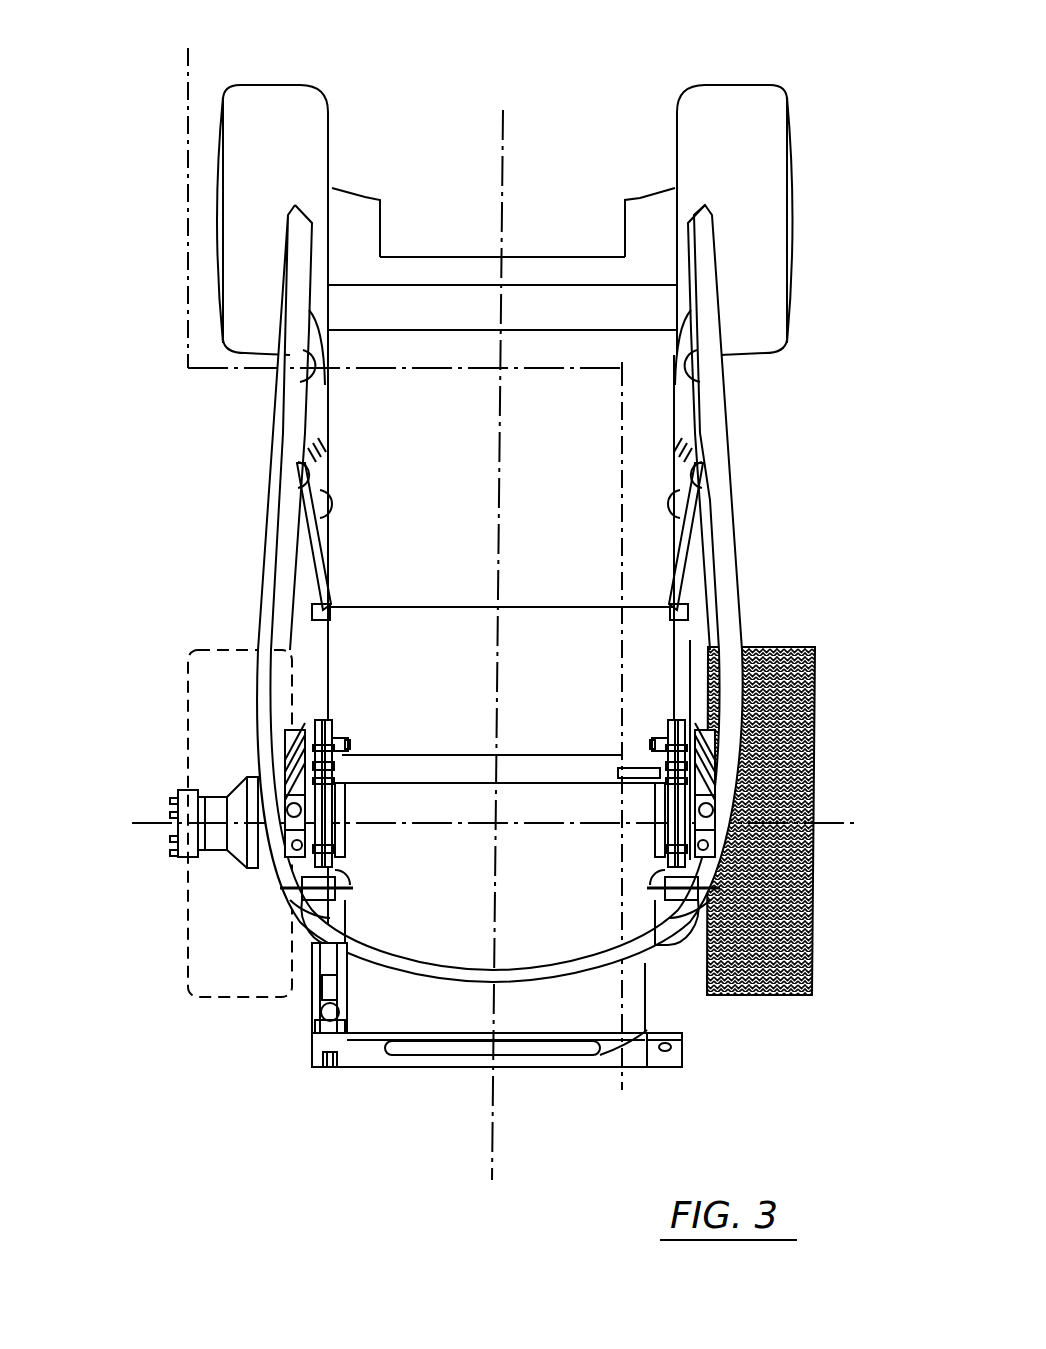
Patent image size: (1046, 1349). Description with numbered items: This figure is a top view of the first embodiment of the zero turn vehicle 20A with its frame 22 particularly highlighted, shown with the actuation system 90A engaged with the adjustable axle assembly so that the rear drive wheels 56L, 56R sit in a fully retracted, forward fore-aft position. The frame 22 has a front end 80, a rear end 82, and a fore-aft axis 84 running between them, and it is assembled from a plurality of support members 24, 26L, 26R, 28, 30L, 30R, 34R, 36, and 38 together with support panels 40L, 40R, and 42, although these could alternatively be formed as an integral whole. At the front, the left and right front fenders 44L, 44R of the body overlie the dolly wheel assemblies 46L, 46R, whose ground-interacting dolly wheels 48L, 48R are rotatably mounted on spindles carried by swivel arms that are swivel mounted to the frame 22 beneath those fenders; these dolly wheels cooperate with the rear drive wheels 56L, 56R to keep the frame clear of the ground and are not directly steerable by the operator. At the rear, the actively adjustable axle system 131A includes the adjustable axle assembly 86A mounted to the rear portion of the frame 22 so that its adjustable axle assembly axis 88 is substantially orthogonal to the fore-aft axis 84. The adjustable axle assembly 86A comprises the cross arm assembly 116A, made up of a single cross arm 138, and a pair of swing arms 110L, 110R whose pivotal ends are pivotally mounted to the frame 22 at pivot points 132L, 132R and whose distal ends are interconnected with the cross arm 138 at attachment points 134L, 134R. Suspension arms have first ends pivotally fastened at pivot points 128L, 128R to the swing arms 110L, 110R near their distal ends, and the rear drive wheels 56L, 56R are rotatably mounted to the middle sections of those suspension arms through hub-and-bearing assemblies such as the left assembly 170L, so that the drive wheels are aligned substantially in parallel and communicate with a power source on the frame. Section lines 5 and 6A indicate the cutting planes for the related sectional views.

The vehicle (first embodiment) 20A is at (132, 78).
The frame 22 is at (260, 562).
The support member 24 is at (276, 428).
The left support member 26L is at (332, 507).
The right support member 26R is at (668, 543).
The support member 28 is at (383, 1068).
The left support member 30L is at (300, 476).
The right support member 30R is at (703, 475).
The right support member 34R is at (686, 1052).
The support member 36 is at (598, 1050).
The support member 38 is at (463, 265).
The left support panel 40L is at (312, 366).
The right support panel 40R is at (696, 366).
The support panel 42 is at (587, 357).
The left front fender 44L is at (285, 157).
The right front fender 44R is at (716, 157).
The left dolly wheel assembly 46L is at (172, 176).
The right dolly wheel assembly 46R is at (812, 205).
The left dolly wheel 48L is at (213, 218).
The right dolly wheel 48R is at (795, 245).
The left rear drive wheel 56L is at (238, 650).
The right rear drive wheel 56R is at (822, 609).
The front end 80 is at (437, 92).
The rear end 82 is at (437, 1162).
The fore-aft axis 84 is at (503, 122).
The adjustable axle assembly 86A is at (165, 852).
The adjustable axle assembly axis 88 is at (137, 820).
The actuation system 90A is at (306, 1020).
The left swing arm 110L is at (322, 730).
The right swing arm 110R is at (678, 720).
The cross arm assembly 116A is at (458, 752).
The left pivot point 128L is at (341, 745).
The right pivot point 128R is at (659, 730).
The actively adjustable axle system 131A is at (150, 705).
The left pivot point 132L is at (345, 888).
The right pivot point 132R is at (655, 888).
The left attachment point 134L is at (345, 790).
The right attachment point 134R is at (652, 770).
The cross arm 138 is at (628, 773).
The left hub-and-bearing assembly 170L is at (210, 873).
The section line 6A is at (188, 50).
The section line 5 is at (245, 1128).